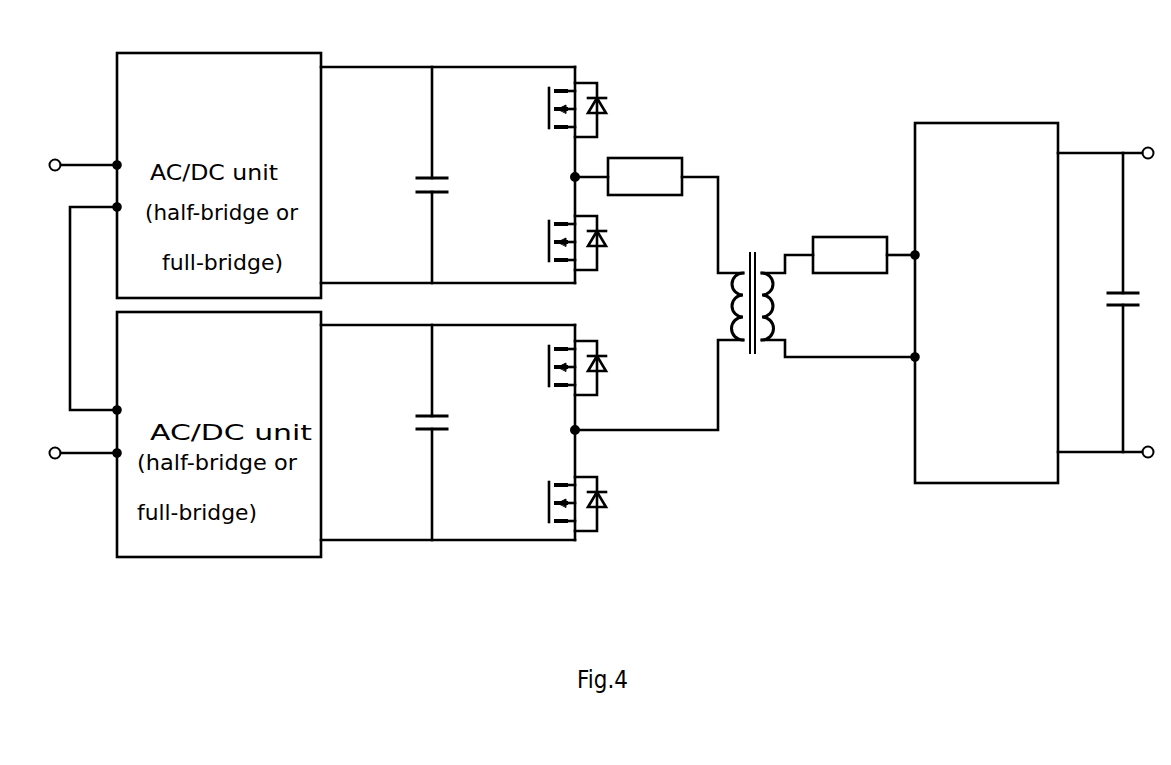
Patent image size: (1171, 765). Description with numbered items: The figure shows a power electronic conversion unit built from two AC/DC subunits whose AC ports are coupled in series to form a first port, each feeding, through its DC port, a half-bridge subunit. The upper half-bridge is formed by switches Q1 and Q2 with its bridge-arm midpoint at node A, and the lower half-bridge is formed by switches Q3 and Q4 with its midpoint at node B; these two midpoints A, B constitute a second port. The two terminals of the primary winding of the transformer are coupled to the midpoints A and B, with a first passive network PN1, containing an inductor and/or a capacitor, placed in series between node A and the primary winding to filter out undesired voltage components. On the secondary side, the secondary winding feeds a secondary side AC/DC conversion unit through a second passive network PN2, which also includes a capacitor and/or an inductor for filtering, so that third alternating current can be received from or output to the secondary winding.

The first switching transistor Q1 is at (549, 128).
The second switching transistor Q2 is at (549, 261).
The third switching transistor Q3 is at (549, 386).
The fourth switching transistor Q4 is at (549, 522).
The first midpoint node A is at (558, 184).
The second midpoint node B is at (558, 443).
The first passive network PN1 is at (642, 152).
The second passive network PN2 is at (849, 232).